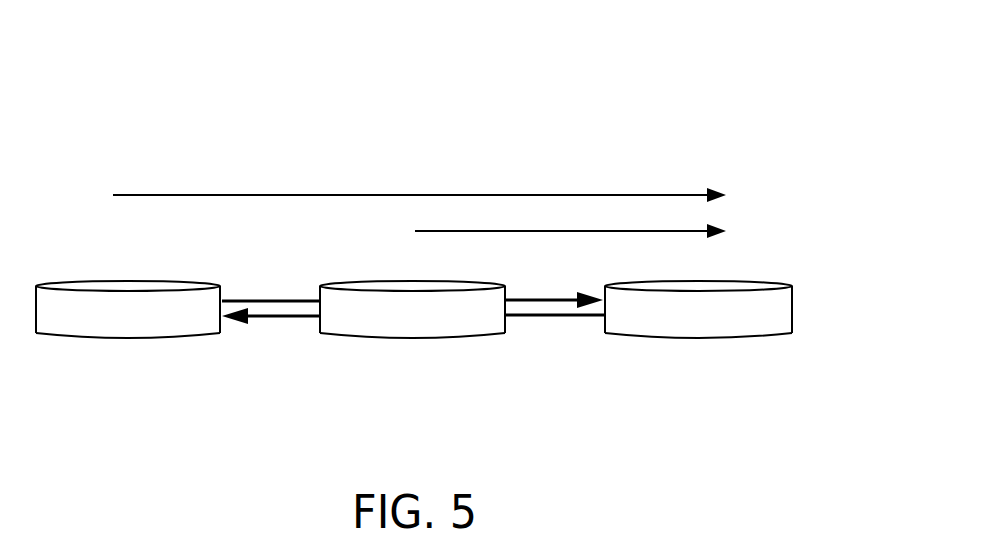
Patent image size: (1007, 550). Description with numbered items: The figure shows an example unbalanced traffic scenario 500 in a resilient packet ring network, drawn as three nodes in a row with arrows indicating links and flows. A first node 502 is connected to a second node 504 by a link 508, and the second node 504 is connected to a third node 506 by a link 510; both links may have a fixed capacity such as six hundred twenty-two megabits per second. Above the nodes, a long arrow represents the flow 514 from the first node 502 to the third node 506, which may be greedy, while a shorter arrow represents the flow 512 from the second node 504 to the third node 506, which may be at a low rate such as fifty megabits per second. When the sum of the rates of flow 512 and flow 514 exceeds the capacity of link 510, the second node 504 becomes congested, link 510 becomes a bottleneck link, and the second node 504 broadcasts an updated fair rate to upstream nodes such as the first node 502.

The unbalanced traffic scenario 500 is at (712, 140).
The first node 502 is at (160, 335).
The second node 504 is at (445, 337).
The third node 506 is at (730, 336).
The link 508 is at (263, 300).
The link 510 is at (527, 298).
The flow 512 is at (678, 231).
The flow 514 is at (203, 195).